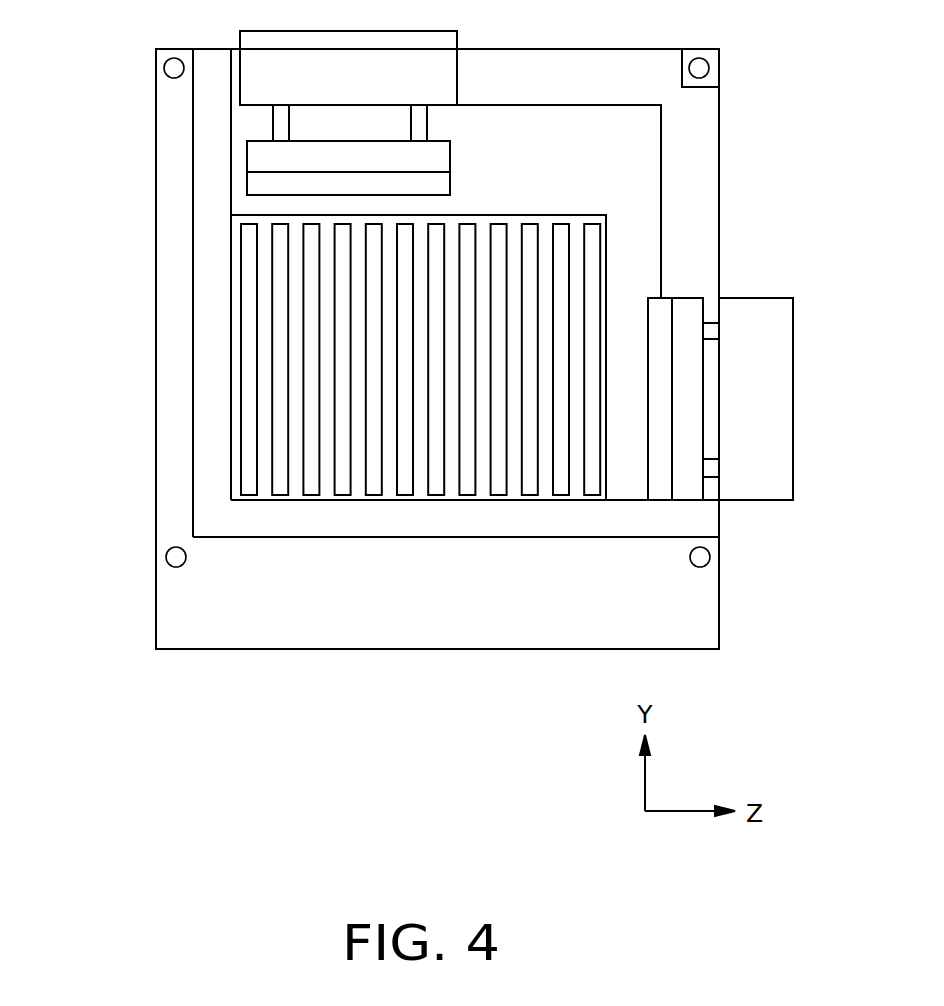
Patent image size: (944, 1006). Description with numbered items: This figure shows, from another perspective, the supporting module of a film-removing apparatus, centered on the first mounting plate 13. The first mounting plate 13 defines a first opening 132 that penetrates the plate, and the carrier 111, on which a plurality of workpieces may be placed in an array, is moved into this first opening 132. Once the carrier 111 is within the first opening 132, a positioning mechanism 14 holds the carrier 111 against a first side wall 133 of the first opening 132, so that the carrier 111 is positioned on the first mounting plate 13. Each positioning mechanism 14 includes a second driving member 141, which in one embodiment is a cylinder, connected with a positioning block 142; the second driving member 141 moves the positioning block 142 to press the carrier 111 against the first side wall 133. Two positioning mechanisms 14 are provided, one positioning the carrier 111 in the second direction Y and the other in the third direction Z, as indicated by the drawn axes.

The first mounting plate 13 is at (213, 466).
The carrier 111 is at (296, 313).
The first opening 132 is at (614, 150).
The first side wall 133 is at (627, 497).
The positioning mechanism 14 is at (445, 265).
The second driving member 141 is at (283, 80).
The positioning block 142 is at (281, 160).